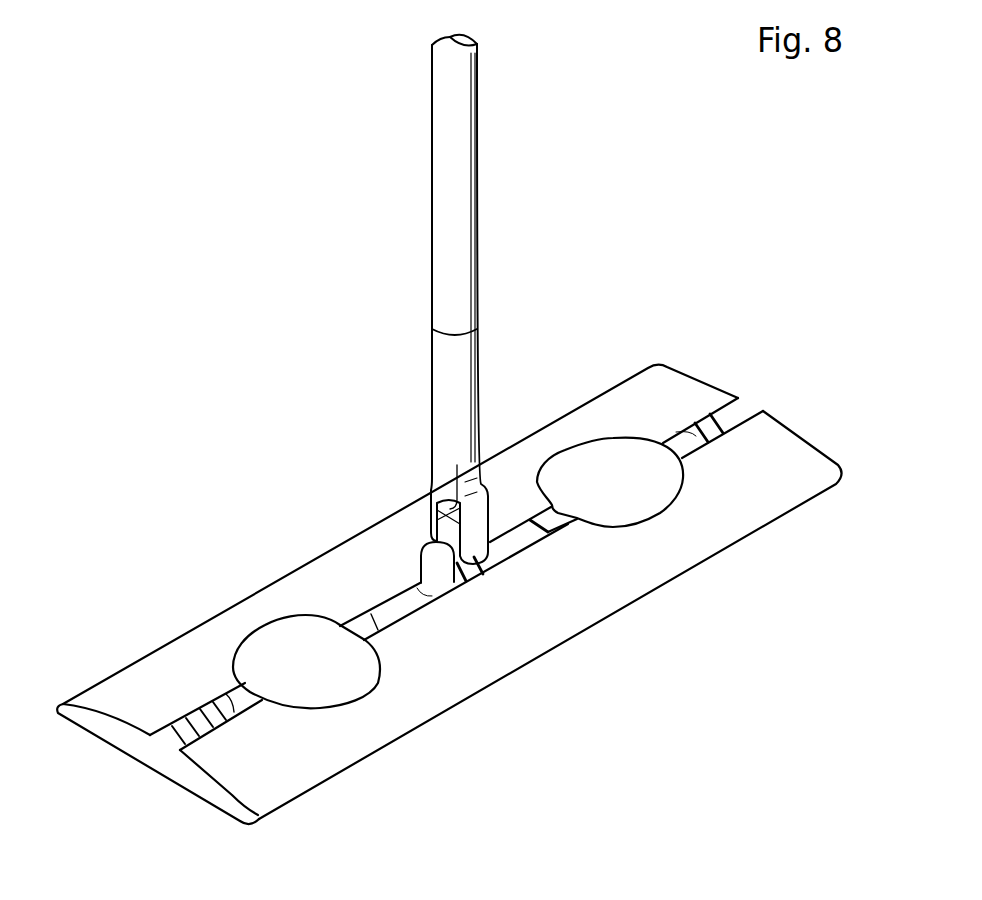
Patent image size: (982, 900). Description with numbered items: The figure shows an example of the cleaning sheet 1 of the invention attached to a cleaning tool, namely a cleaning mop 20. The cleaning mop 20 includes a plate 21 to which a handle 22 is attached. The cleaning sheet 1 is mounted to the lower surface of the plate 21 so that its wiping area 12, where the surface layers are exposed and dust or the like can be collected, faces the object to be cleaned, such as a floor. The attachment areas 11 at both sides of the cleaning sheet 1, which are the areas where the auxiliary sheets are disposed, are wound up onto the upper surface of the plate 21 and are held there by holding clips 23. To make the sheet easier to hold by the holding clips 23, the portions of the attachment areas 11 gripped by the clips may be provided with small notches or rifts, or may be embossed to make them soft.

The cleaning sheet 1 is at (452, 558).
The attachment areas 11 is at (656, 356).
The wiping areas 12 is at (233, 838).
The cleaning mop 20 is at (458, 372).
The plate 21 is at (203, 718).
The handle 22 is at (462, 250).
The holding clips 23 is at (279, 643).